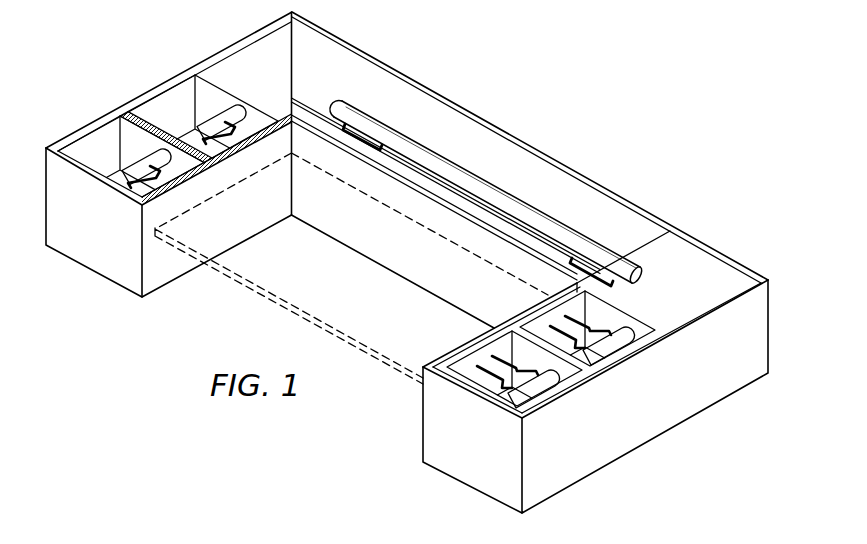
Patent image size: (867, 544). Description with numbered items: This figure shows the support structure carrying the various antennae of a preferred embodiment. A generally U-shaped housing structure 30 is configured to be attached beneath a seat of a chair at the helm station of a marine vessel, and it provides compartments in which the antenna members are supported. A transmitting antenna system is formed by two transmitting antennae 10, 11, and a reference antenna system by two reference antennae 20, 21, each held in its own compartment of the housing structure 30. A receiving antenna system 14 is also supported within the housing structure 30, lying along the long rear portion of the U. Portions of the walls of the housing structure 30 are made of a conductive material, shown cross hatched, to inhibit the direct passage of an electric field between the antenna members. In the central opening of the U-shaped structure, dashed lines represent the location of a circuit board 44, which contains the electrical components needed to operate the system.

The transmitting antenna 10 is at (214, 123).
The reference antenna 20 is at (135, 170).
The transmitting antenna 11 is at (617, 341).
The reference antenna 21 is at (547, 389).
The receiving antenna system 14 is at (365, 122).
The housing structure 30 is at (504, 128).
The circuit board 44 is at (300, 313).